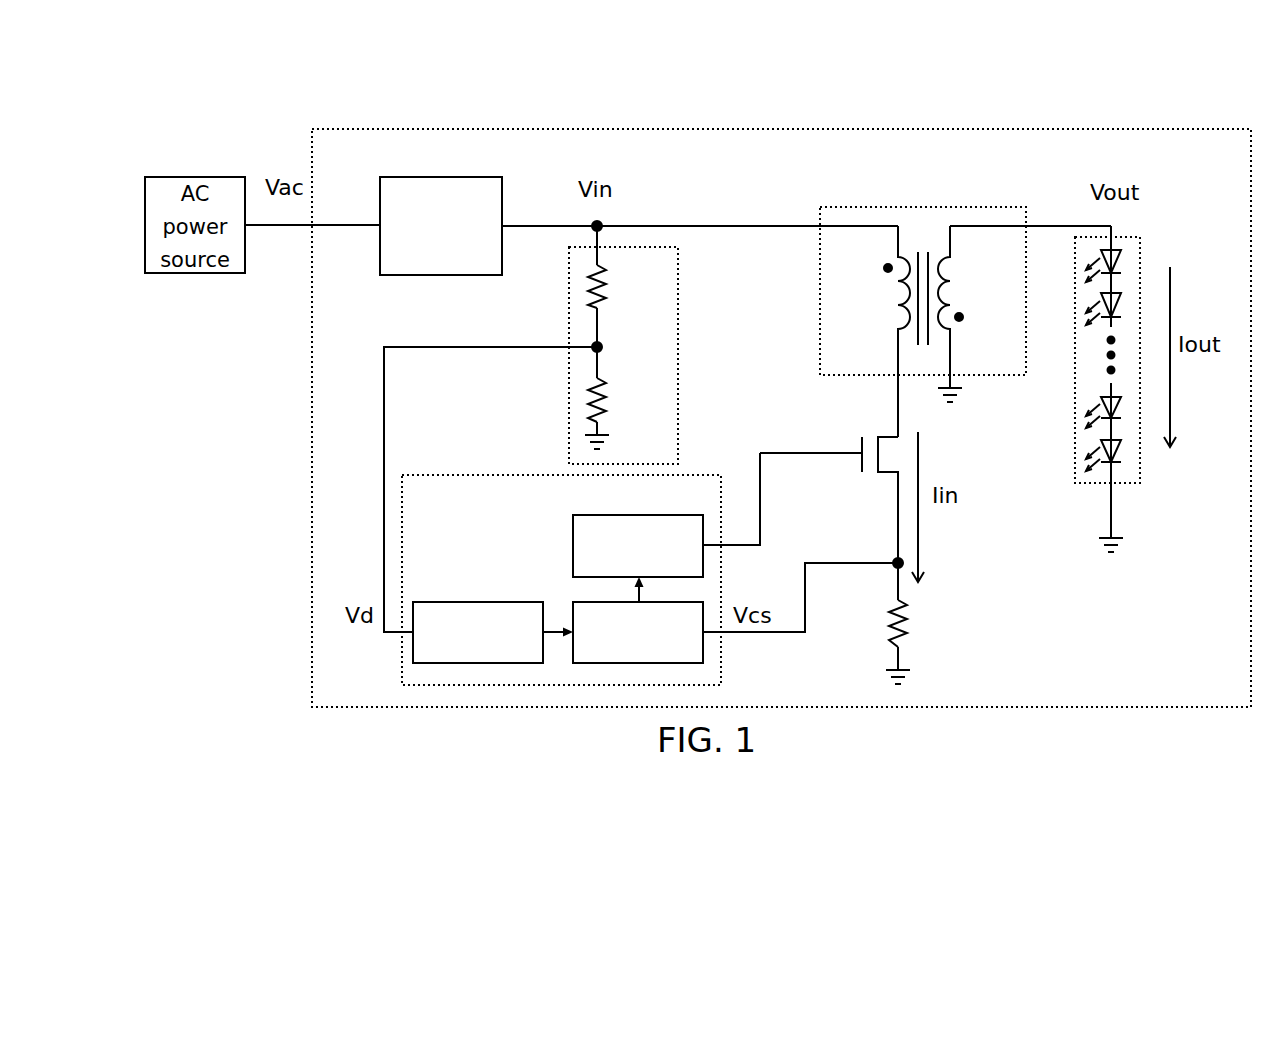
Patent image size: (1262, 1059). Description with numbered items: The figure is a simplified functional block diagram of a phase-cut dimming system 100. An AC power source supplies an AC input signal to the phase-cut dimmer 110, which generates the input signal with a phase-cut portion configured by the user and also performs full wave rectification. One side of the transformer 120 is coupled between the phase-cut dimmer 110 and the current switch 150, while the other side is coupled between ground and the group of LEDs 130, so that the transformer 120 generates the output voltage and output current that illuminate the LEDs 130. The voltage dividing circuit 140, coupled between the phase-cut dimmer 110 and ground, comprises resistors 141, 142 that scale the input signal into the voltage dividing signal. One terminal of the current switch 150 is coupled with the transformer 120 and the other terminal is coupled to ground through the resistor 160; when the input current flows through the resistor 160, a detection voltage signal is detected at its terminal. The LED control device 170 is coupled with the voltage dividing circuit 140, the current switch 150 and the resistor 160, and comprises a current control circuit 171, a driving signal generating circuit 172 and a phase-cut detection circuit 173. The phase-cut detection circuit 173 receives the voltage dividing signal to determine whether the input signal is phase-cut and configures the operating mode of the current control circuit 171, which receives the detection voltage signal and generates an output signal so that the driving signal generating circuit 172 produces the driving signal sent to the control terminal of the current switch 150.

The phase-cut dimming system 100 is at (1161, 128).
The phase-cut dimmer 110 is at (437, 276).
The transformer 120 is at (922, 207).
The group of LEDs 130 is at (1142, 249).
The voltage dividing circuit 140 is at (673, 345).
The resistor 141 is at (621, 284).
The resistor 142 is at (623, 402).
The current switch 150 is at (861, 418).
The resistor 160 is at (927, 626).
The LED control device 170 is at (561, 551).
The current control circuit 171 is at (580, 602).
The driving signal generating circuit 172 is at (667, 515).
The phase-cut detection circuit 173 is at (492, 602).